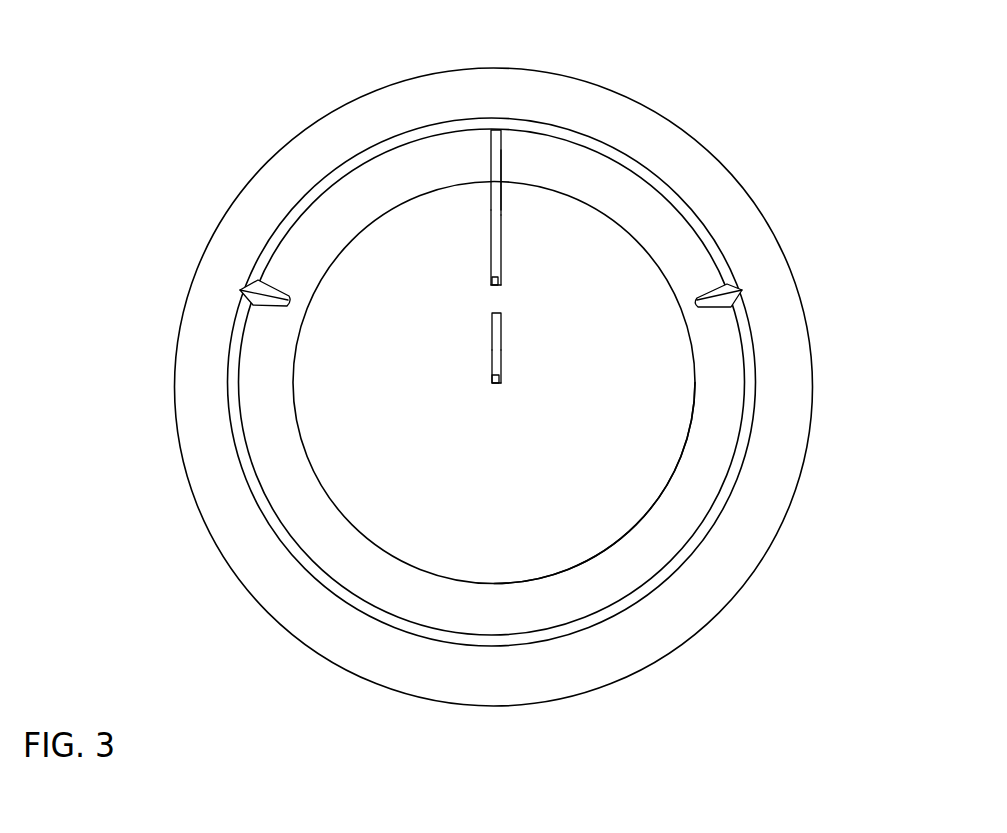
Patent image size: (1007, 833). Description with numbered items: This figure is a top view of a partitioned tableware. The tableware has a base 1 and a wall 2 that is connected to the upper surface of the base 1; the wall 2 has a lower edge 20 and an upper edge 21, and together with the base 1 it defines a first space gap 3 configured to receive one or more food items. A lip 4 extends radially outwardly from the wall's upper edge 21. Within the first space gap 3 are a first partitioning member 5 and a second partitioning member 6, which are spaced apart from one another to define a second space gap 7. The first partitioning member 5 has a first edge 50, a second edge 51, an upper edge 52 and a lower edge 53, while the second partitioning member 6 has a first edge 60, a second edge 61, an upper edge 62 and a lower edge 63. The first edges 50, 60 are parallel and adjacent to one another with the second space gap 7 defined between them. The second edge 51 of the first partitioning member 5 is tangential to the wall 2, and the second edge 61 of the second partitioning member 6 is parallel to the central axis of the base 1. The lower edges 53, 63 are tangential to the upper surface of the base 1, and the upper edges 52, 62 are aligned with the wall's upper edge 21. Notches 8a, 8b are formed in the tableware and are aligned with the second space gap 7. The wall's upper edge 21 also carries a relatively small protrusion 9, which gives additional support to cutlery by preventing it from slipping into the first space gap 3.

The base 1 is at (496, 439).
The wall 2 is at (431, 424).
The first space gap 3 is at (632, 487).
The lip 4 is at (188, 382).
The first partitioning member 5 is at (457, 165).
The second partitioning member 6 is at (707, 384).
The second space gap 7 is at (495, 297).
The notch 8a is at (723, 288).
The notch 8b is at (240, 290).
The protrusion 9 is at (235, 422).
The lower edge 20 is at (452, 578).
The upper edge 21 is at (412, 627).
The first edge 50 is at (492, 280).
The second edge 51 is at (502, 155).
The upper edge 52 is at (497, 150).
The lower edge 53 is at (502, 275).
The first edge 60 is at (502, 315).
The second edge 61 is at (498, 380).
The upper edge 62 is at (498, 366).
The lower edge 63 is at (497, 383).